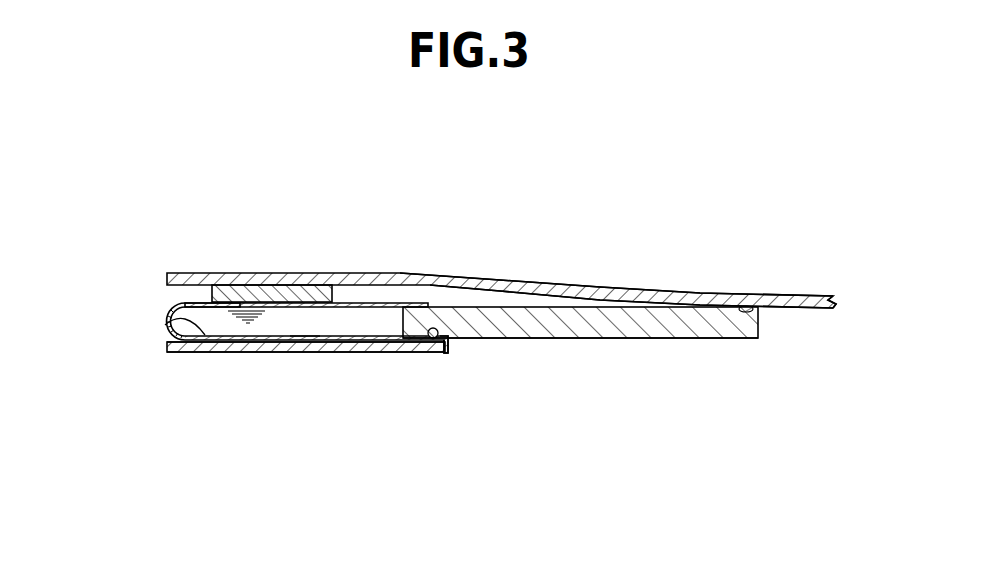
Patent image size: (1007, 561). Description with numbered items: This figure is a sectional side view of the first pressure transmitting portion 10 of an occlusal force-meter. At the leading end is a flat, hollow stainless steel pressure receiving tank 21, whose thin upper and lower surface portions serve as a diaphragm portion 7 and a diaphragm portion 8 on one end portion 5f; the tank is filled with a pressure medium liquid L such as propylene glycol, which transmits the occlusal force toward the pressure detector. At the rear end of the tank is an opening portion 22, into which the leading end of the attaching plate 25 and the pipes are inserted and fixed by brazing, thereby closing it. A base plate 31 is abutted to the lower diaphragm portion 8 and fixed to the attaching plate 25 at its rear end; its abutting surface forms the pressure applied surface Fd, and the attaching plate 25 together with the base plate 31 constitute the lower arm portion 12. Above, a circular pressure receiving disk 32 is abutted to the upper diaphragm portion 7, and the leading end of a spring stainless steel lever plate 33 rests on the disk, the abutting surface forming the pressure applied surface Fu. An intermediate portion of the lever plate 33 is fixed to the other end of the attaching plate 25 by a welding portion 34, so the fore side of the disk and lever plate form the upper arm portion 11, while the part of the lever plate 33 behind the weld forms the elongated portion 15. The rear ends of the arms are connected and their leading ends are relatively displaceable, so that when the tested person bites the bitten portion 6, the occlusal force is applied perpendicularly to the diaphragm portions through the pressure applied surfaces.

The first pressure transmitting portion 10 is at (563, 268).
The upper arm portion 11 is at (478, 272).
The elongated portion 15 is at (806, 296).
The diaphragm portion 7 is at (355, 300).
The lever plate 33 is at (385, 300).
The pressure receiving disk 32 is at (205, 300).
The pressure receiving tank 21 is at (162, 310).
The diaphragm portion 8 is at (333, 340).
The opening portion 22 is at (443, 350).
The base plate 31 is at (250, 353).
The one end portion 5f is at (205, 374).
The lower arm portion 12 is at (507, 345).
The attaching plate 25 is at (660, 340).
The welding portion 34 is at (740, 312).
The pressure applied surface Fu is at (312, 302).
The pressure applied surface Fd is at (165, 325).
The pressure medium liquid L is at (303, 328).
The bitten portion 6 is at (273, 410).